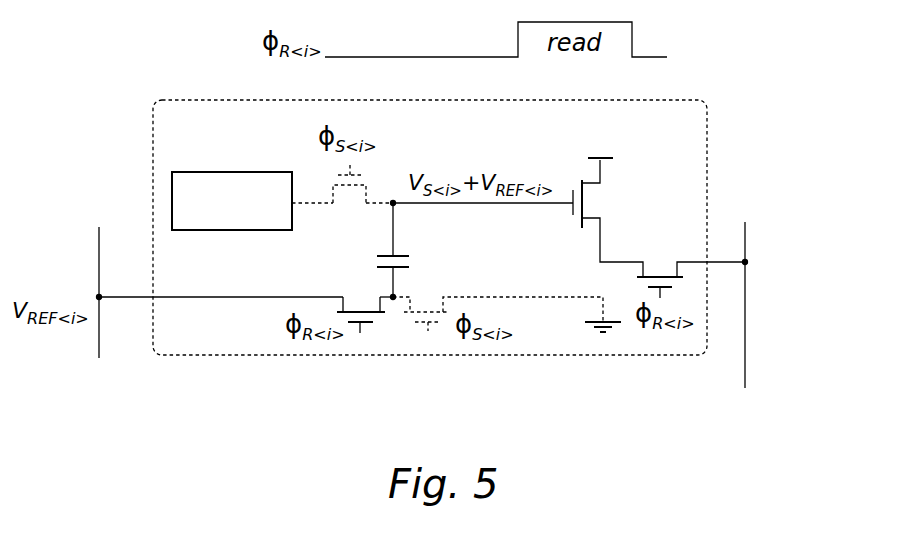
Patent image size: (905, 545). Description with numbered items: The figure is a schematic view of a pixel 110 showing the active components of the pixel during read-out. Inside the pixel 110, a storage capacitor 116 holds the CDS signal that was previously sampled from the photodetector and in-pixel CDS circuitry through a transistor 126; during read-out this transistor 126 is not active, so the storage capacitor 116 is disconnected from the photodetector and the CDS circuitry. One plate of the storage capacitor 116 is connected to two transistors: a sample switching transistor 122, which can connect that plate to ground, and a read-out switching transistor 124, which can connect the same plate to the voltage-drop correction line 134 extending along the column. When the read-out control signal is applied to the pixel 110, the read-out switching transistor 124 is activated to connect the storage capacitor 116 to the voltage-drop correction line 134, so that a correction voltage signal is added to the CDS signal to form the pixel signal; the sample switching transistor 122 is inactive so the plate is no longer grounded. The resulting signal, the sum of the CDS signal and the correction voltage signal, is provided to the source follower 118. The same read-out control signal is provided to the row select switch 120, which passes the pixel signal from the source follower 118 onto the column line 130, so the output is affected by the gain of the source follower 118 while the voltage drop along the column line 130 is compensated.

The pixel 110 is at (707, 118).
The storage capacitor 116 is at (412, 270).
The source follower 118 is at (585, 200).
The row select switch 120 is at (656, 275).
The sample switching transistor 122 is at (430, 326).
The read-out switching transistor 124 is at (358, 309).
The transistor 126 is at (368, 185).
The column line 130 is at (748, 278).
The voltage-drop correction line 134 is at (97, 270).